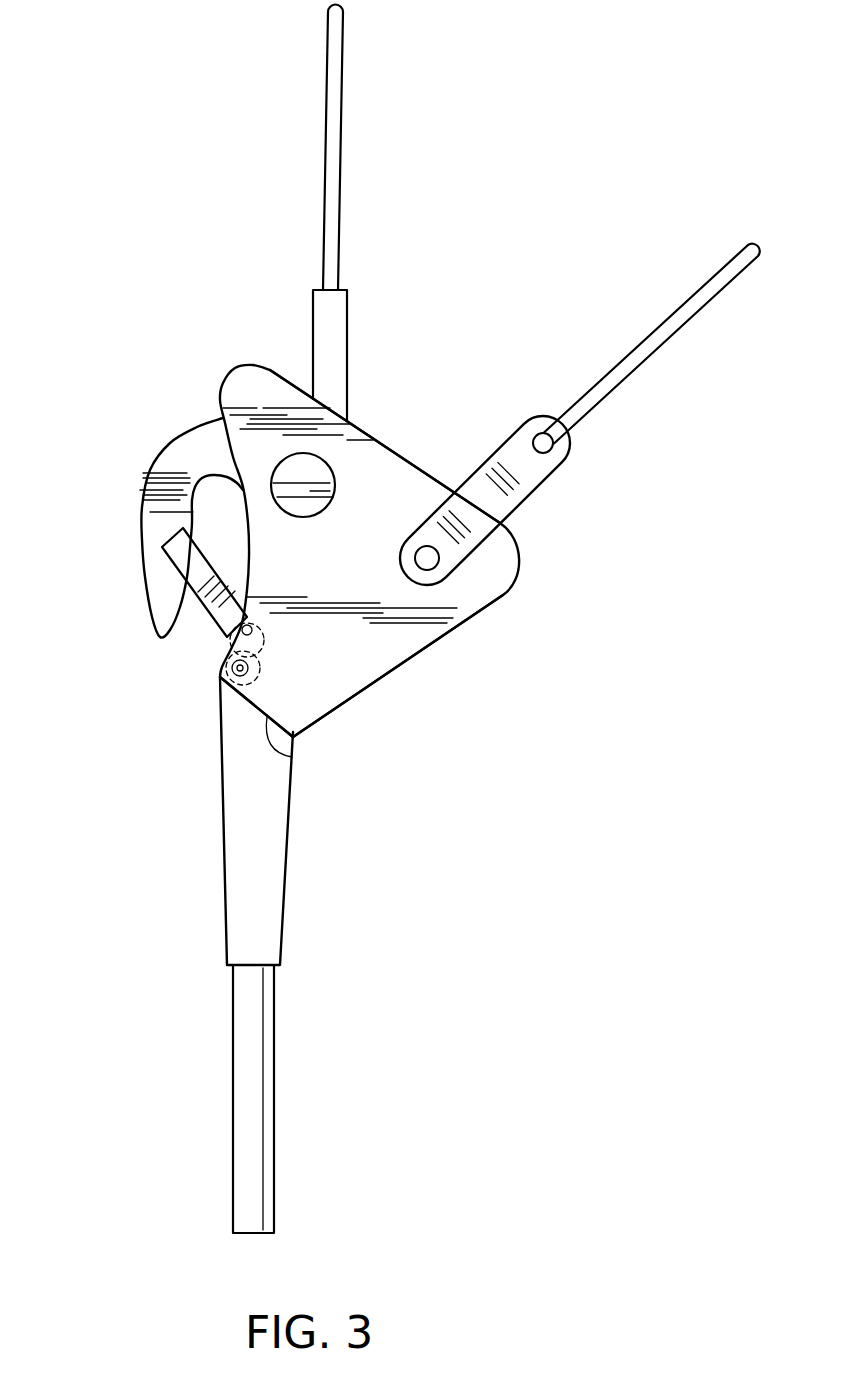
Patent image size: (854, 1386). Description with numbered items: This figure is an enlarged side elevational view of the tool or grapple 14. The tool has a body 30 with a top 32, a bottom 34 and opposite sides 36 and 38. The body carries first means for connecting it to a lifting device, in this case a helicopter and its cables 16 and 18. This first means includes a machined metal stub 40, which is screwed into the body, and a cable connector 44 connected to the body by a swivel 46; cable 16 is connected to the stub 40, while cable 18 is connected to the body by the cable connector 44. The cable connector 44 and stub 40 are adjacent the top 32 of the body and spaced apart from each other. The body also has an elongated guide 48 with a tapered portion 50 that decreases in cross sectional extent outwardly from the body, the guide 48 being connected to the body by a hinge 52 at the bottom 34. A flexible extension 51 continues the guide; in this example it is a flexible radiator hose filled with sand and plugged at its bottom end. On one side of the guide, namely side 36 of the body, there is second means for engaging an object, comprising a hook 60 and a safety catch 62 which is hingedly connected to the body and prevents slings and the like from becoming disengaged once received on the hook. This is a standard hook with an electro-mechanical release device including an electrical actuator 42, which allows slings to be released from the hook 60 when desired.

The tool or grapple 14 is at (448, 712).
The cable 16 is at (328, 104).
The cable 18 is at (645, 351).
The body 30 is at (395, 640).
The top 32 is at (392, 449).
The bottom 34 is at (293, 758).
The side 36 is at (245, 518).
The side 38 is at (352, 693).
The stub 40 is at (320, 303).
The electrical actuator 42 is at (340, 503).
The cable connector 44 is at (503, 500).
The swivel 46 is at (432, 565).
The elongated guide 48 is at (284, 1013).
The tapered portion 50 is at (265, 850).
The flexible extension 51 is at (253, 1132).
The hinge 52 is at (240, 692).
The hook 60 is at (165, 578).
The safety catch 62 is at (190, 567).